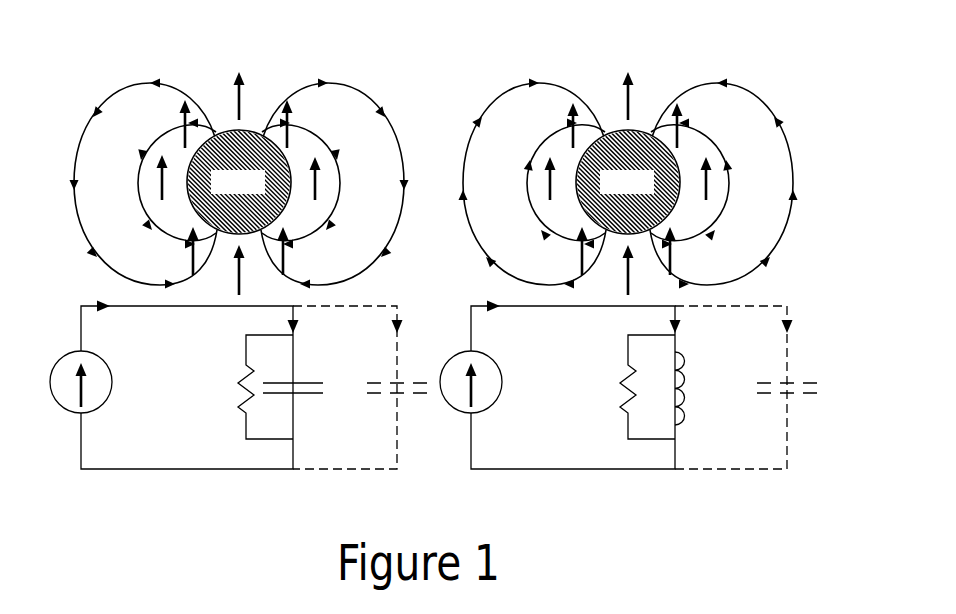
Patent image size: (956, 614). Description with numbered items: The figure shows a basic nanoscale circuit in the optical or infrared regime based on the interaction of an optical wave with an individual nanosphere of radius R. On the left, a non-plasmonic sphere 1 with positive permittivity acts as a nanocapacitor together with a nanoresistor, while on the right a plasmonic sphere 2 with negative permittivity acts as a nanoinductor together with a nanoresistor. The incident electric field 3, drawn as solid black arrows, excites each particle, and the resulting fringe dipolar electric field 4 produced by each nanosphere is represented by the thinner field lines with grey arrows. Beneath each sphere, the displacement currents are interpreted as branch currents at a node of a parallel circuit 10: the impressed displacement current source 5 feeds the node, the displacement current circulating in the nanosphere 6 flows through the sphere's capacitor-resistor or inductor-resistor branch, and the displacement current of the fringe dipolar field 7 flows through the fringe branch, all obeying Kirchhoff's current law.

The non-plasmonic sphere 1 is at (252, 101).
The plasmonic sphere 2 is at (633, 128).
The incident electric field 3 is at (235, 97).
The fringe dipolar electric field 4 is at (137, 208).
The impressed displacement current source 5 is at (81, 330).
The displacement current circulating in the nanosphere 6 is at (325, 358).
The displacement current of the fringe (dipolar) field 7 is at (427, 355).
The parallel circuit 10 is at (249, 485).